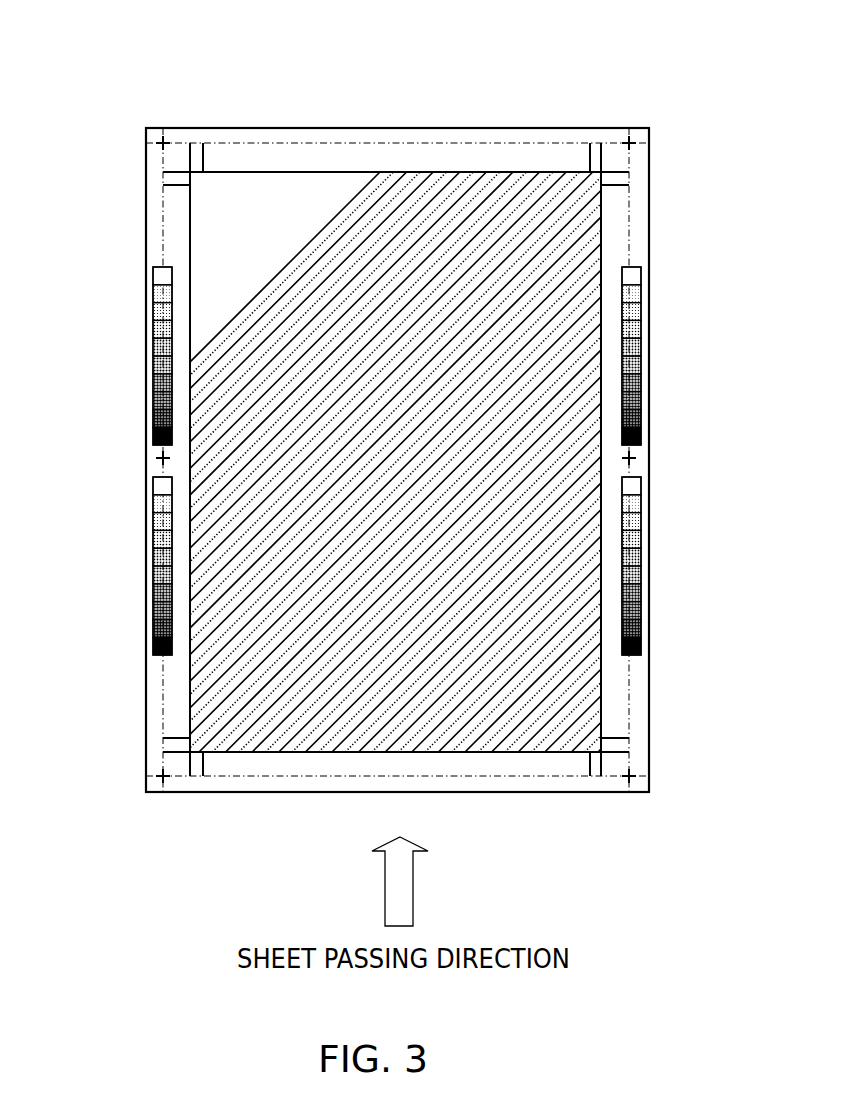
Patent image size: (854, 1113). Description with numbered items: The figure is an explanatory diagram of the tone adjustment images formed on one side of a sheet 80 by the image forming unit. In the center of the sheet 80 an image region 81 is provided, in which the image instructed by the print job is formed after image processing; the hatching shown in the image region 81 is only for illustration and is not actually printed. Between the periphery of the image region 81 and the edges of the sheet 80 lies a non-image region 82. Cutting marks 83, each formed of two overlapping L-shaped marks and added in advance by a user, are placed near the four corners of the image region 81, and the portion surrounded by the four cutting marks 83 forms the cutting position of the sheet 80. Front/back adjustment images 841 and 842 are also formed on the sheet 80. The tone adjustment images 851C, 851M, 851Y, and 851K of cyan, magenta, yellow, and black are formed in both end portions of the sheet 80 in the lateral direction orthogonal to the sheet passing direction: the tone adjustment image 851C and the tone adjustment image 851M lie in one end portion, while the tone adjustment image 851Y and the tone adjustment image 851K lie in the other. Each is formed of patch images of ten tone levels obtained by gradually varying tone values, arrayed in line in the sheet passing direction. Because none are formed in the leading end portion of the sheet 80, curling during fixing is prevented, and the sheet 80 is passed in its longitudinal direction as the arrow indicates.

The sheet 80 is at (490, 56).
The image region 81 is at (530, 185).
The non-image region 82 is at (390, 143).
The cutting marks 83 is at (148, 170).
The front/back adjustment image 841 is at (148, 129).
The front/back adjustment image 842 is at (152, 458).
The tone adjustment image 851C is at (153, 300).
The tone adjustment image 851M is at (153, 560).
The tone adjustment image 851Y is at (641, 300).
The tone adjustment image 851K is at (641, 560).